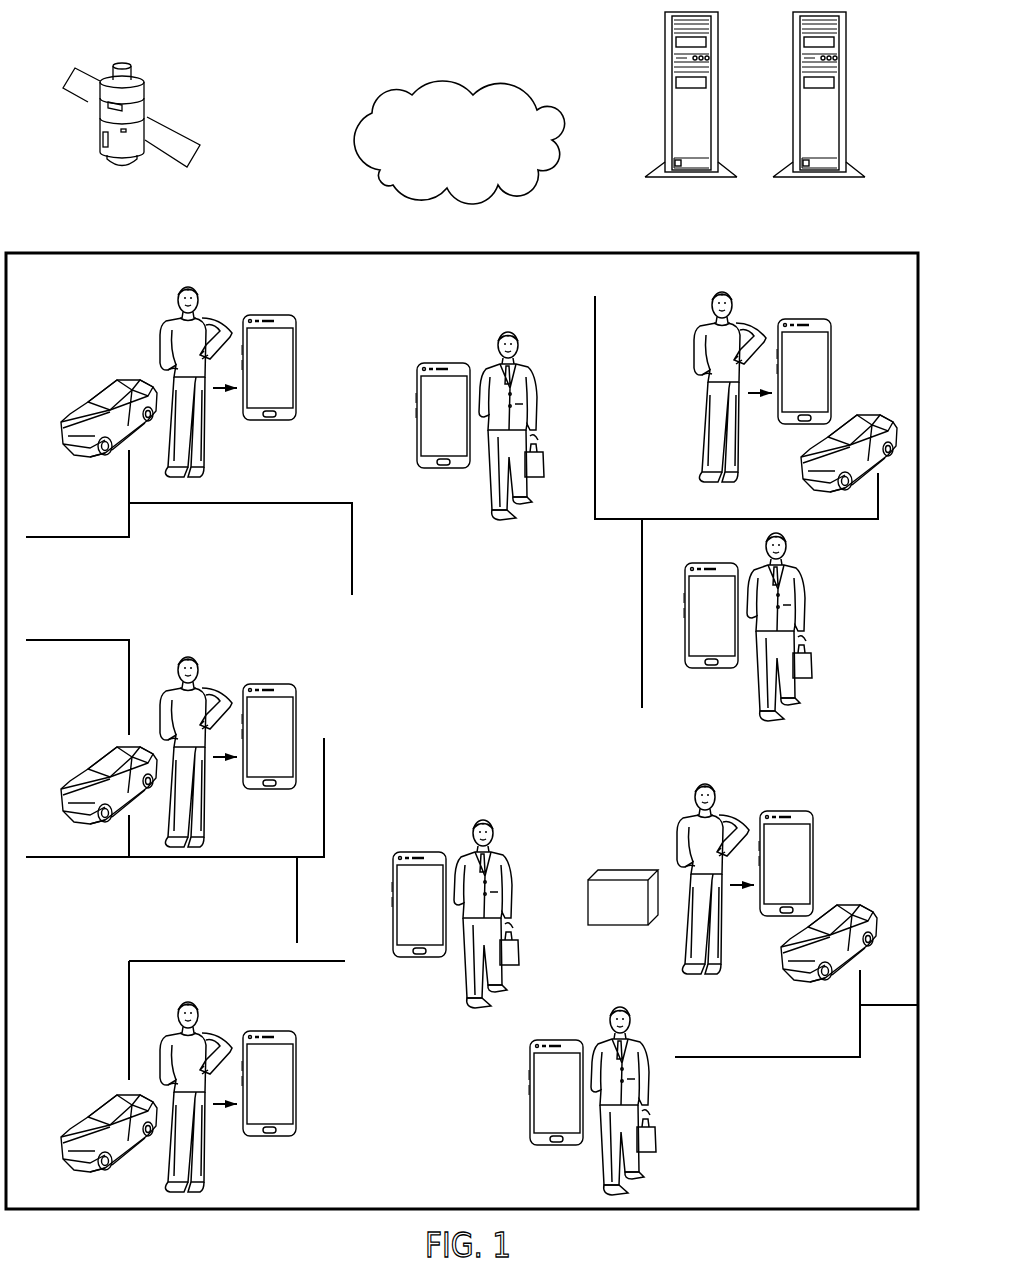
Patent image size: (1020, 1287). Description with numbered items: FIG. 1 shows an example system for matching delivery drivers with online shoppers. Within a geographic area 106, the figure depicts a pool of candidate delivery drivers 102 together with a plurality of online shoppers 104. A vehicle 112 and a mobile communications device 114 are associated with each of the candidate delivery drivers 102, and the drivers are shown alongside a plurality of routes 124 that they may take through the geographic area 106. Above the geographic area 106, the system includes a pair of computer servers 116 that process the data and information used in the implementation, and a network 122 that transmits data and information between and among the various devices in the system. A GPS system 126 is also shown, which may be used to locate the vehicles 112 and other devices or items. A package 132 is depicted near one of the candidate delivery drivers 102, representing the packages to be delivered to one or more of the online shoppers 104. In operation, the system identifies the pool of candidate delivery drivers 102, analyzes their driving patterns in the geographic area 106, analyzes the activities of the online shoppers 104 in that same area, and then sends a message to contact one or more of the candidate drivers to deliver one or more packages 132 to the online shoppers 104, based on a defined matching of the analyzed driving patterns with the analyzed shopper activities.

The candidate delivery drivers 102 is at (133, 320).
The online shoppers 104 is at (505, 490).
The geographic area 106 is at (60, 252).
The vehicle 112 is at (858, 903).
The mobile communications device 114 is at (271, 315).
The computer servers 116 is at (665, 50).
The network 122 is at (479, 168).
The routes 124 is at (245, 518).
The GPS system 126 is at (205, 101).
The packages 132 is at (600, 916).